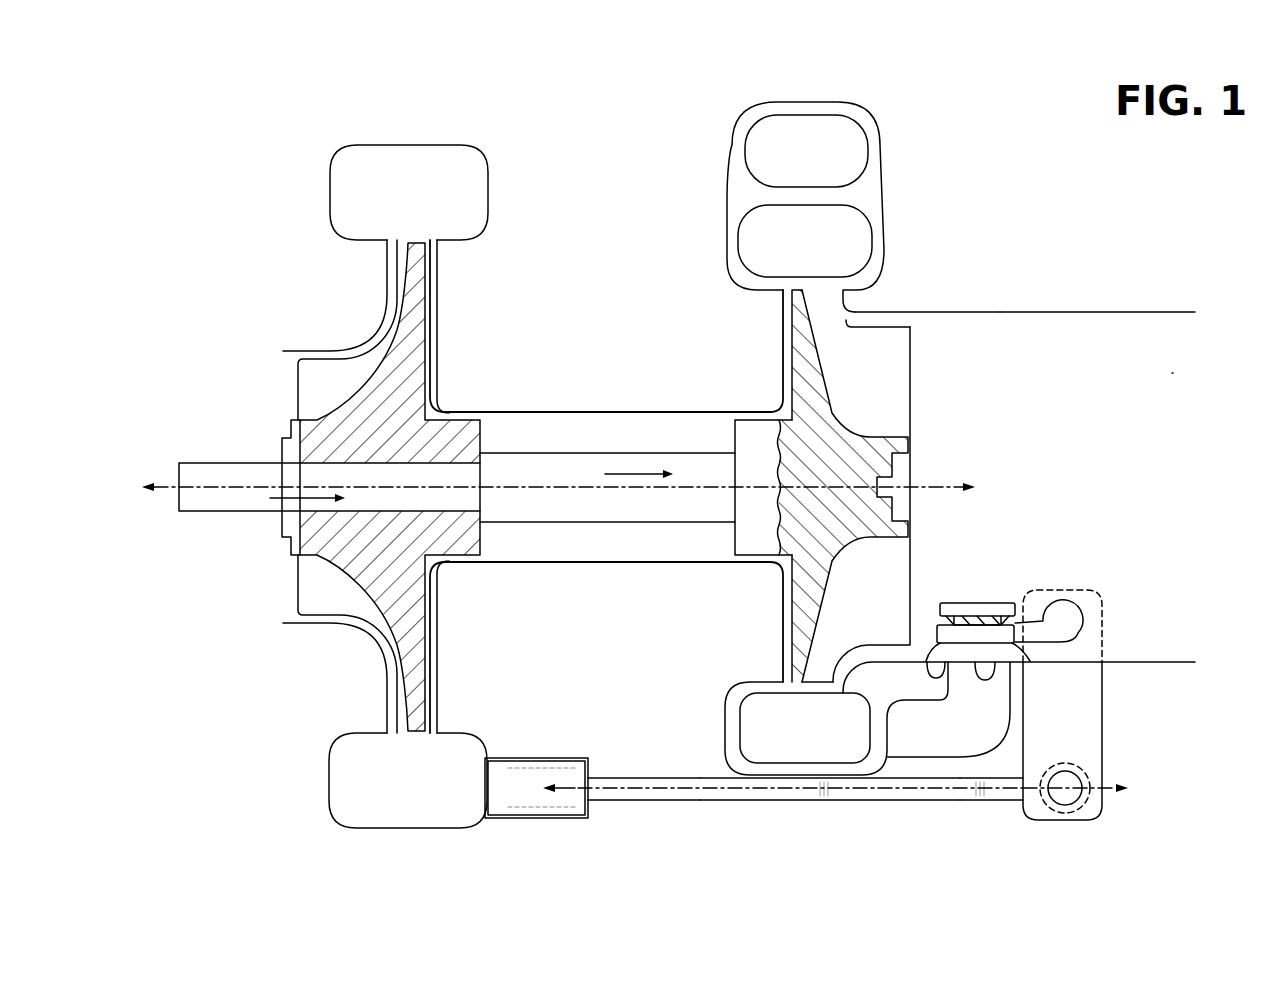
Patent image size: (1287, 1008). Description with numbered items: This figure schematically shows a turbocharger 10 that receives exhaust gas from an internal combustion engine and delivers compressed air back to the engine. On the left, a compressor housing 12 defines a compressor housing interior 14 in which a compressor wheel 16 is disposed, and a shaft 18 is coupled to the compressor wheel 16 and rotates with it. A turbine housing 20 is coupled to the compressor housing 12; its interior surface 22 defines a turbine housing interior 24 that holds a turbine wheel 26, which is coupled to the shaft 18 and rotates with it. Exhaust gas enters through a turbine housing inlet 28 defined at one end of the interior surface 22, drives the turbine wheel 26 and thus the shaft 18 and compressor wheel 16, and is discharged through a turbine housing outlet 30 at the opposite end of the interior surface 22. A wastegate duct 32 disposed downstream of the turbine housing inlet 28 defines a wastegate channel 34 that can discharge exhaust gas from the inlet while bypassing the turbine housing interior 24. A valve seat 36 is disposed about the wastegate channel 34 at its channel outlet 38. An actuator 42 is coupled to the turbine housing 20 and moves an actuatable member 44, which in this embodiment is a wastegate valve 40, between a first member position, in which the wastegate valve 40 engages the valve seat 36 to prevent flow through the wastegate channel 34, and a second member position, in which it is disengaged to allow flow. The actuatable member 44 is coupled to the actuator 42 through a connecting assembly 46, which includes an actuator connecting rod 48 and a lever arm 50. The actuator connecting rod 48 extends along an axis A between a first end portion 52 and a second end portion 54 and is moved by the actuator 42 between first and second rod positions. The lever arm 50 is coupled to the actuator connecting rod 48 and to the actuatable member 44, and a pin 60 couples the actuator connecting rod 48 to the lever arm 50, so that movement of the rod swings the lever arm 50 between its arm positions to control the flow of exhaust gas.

The turbocharger 10 is at (256, 136).
The compressor housing 12 is at (330, 224).
The compressor housing interior 14 is at (299, 353).
The compressor wheel 16 is at (290, 428).
The shaft 18 is at (548, 468).
The turbine housing 20 is at (883, 187).
The interior surface 22 is at (1027, 312).
The turbine housing interior 24 is at (928, 323).
The turbine wheel 26 is at (848, 325).
The turbine housing inlet 28 is at (843, 142).
The turbine housing outlet 30 is at (1172, 373).
The wastegate duct 32 is at (955, 757).
The wastegate channel 34 is at (928, 727).
The valve seat 36 is at (918, 657).
The channel outlet 38 is at (996, 665).
The wastegate valve 40 is at (977, 579).
The actuator 42 is at (528, 818).
The actuatable member 44 is at (977, 603).
The connecting assembly 46 is at (1104, 831).
The actuator connecting rod 48 is at (790, 793).
The lever arm 50 is at (1087, 728).
The first end portion 52 is at (600, 778).
The second end portion 54 is at (1010, 797).
The pin 60 is at (1068, 782).